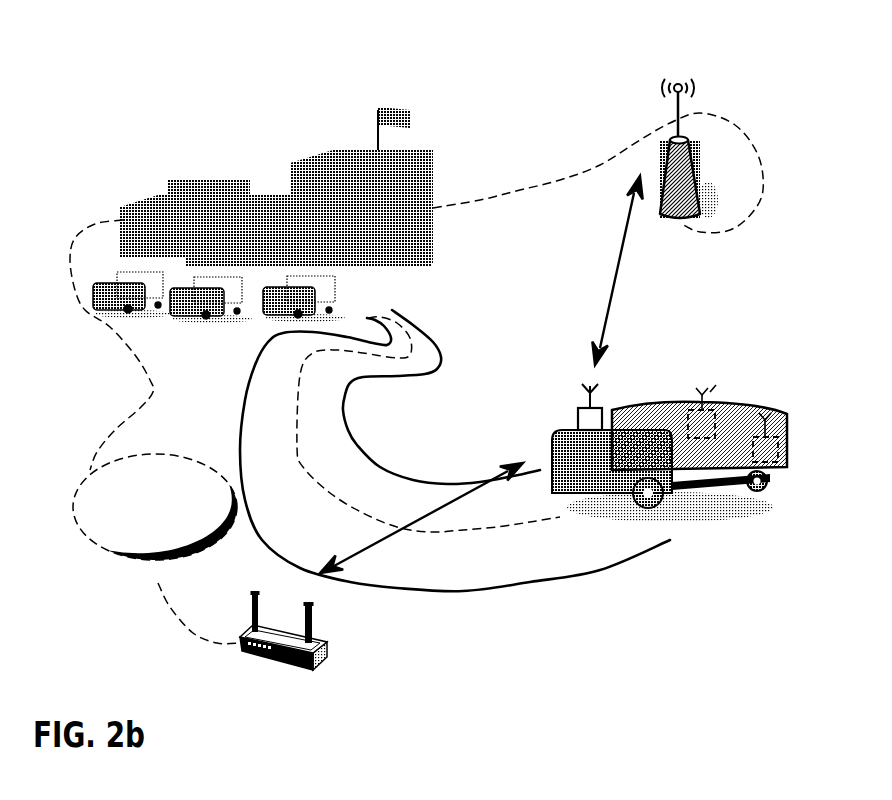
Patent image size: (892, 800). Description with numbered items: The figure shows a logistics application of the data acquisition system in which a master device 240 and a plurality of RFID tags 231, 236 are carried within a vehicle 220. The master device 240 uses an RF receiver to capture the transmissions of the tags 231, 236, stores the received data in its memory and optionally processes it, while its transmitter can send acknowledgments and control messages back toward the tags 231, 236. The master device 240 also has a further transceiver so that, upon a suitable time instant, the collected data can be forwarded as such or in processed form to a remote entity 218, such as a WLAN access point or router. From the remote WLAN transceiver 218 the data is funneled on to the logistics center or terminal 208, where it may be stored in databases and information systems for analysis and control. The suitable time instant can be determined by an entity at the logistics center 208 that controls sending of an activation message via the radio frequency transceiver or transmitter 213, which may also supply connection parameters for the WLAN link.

The logistics center/terminal 208 is at (226, 178).
The radio frequency transceiver or transmitter 213 is at (663, 111).
The remote WLAN transceiver 218 is at (283, 614).
The vehicle 220 is at (640, 458).
The master device 240 is at (560, 387).
The RFID tag 231 is at (687, 382).
The RFID tag 236 is at (781, 409).